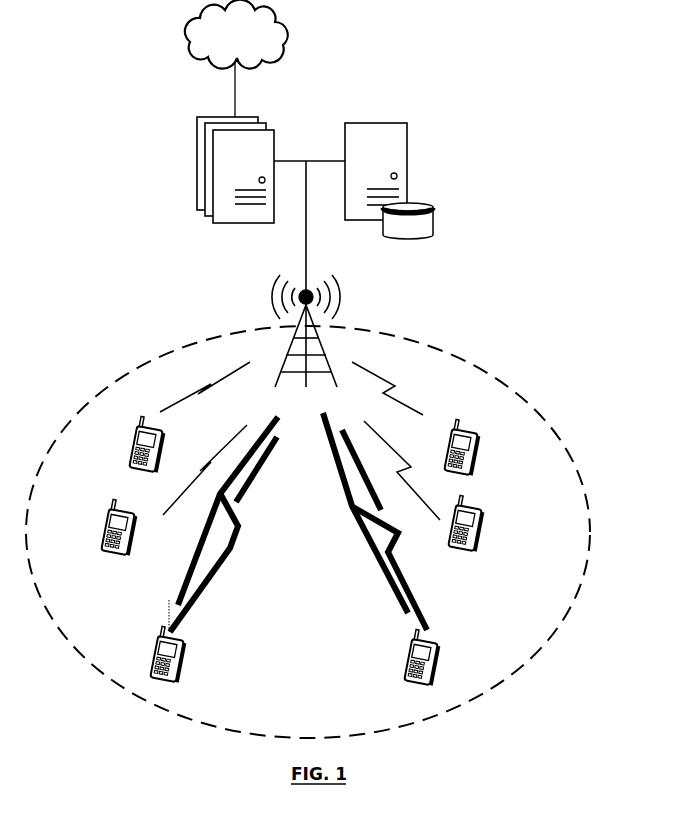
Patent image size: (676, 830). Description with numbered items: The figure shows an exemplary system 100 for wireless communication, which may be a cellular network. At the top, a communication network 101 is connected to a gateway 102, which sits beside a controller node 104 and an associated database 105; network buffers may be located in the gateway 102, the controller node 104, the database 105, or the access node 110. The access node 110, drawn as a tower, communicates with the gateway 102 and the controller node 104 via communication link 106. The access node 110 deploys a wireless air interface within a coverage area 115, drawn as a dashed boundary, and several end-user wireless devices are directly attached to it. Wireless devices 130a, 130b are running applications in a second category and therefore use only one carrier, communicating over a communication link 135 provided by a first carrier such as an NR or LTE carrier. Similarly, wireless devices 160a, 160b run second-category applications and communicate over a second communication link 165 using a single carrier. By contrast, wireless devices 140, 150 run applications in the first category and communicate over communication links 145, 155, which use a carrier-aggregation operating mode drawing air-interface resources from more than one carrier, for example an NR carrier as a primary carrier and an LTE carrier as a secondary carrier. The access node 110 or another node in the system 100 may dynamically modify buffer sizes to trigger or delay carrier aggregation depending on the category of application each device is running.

The system 100 is at (338, 66).
The communication network 101 is at (219, 45).
The gateway 102 is at (200, 117).
The controller node 104 is at (407, 123).
The database 105 is at (433, 207).
The communication link 106 is at (306, 240).
The access node 110 is at (292, 353).
The coverage area 115 is at (366, 326).
The end-user wireless device 130a is at (132, 462).
The end-user wireless device 130b is at (118, 557).
The communication link 135 is at (186, 393).
The end-user wireless device 140 is at (157, 672).
The communication link 145 is at (252, 500).
The end-user wireless device 150 is at (437, 678).
The communication link 155 is at (368, 540).
The end-user wireless device 160a is at (480, 471).
The end-user wireless device 160b is at (487, 530).
The second communication link 165 is at (393, 385).